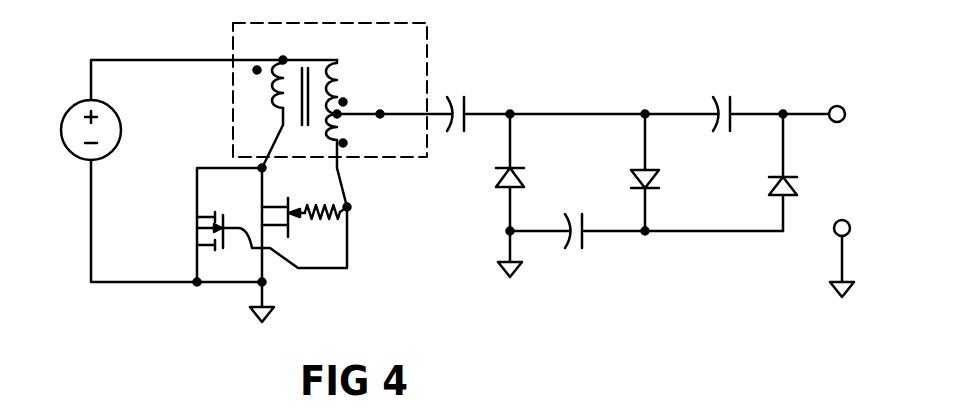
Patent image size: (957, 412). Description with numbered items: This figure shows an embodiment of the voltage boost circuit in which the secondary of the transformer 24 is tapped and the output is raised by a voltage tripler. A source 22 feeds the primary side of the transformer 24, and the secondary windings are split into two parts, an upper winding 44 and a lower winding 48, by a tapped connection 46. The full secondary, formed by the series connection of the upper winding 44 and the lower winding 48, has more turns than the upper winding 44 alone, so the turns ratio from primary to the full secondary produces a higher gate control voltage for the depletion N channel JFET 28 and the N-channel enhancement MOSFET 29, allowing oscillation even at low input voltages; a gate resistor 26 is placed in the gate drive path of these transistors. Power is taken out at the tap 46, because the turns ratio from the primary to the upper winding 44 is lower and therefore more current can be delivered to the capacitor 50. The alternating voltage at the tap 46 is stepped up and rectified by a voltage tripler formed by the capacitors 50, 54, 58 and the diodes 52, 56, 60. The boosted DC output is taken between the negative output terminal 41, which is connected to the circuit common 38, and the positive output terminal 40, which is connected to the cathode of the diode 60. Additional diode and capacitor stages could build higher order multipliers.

The source 22 is at (72, 148).
The transformer 24 is at (309, 115).
The gate resistor 26 is at (322, 203).
The depletion N channel JFET 28 is at (290, 232).
The N-channel enhancement MOSFET 29 is at (228, 218).
The common 38 is at (248, 318).
The positive output terminal from voltage step up circuit 40 is at (843, 128).
The negative output terminal from voltage step up circuit 41 is at (855, 238).
The upper winding on secondary 44 is at (340, 82).
The tap on secondary winding 46 is at (380, 113).
The lower winding on secondary 48 is at (340, 128).
The capacitor 50 is at (475, 103).
The diode 52 is at (512, 168).
The capacitor 54 is at (588, 240).
The diode 56 is at (655, 192).
The capacitor 58 is at (735, 103).
The diode 60 is at (777, 175).